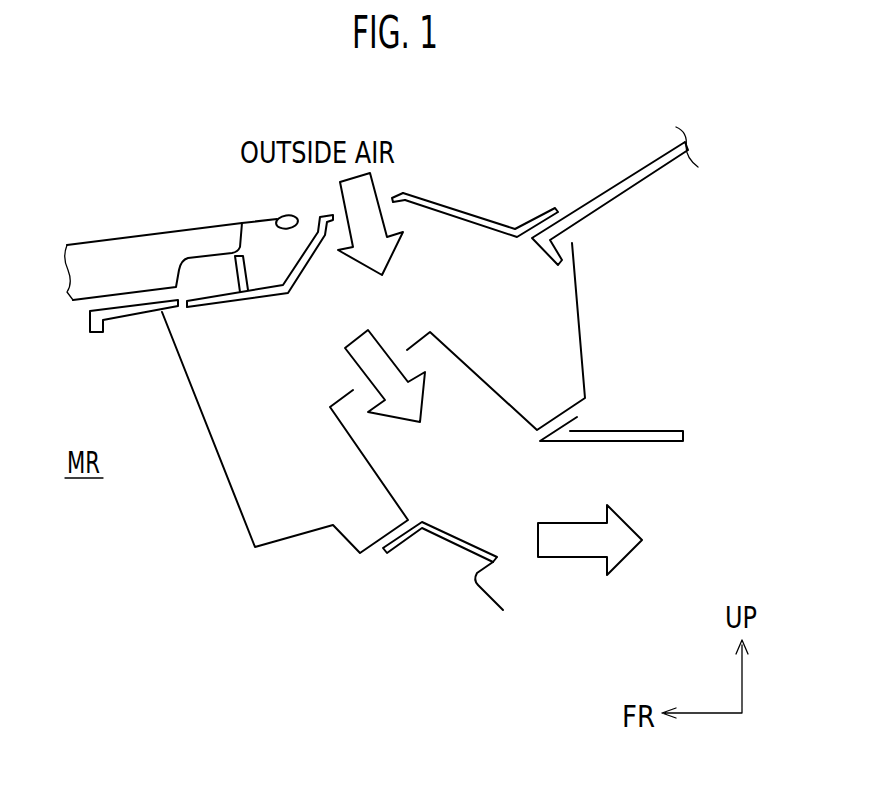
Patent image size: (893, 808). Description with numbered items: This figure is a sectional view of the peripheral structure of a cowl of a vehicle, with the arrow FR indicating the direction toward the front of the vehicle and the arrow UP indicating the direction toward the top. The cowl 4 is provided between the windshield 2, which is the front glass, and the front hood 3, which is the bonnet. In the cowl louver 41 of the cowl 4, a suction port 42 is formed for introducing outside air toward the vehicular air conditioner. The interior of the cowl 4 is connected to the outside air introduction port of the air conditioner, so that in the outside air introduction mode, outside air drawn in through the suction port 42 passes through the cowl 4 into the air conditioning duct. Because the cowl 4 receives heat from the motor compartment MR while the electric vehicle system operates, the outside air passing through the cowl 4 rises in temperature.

The windshield 2 is at (605, 188).
The front hood 3 is at (165, 232).
The cowl 4 is at (593, 313).
The cowl louver 41 is at (458, 209).
The suction port 42 is at (385, 203).